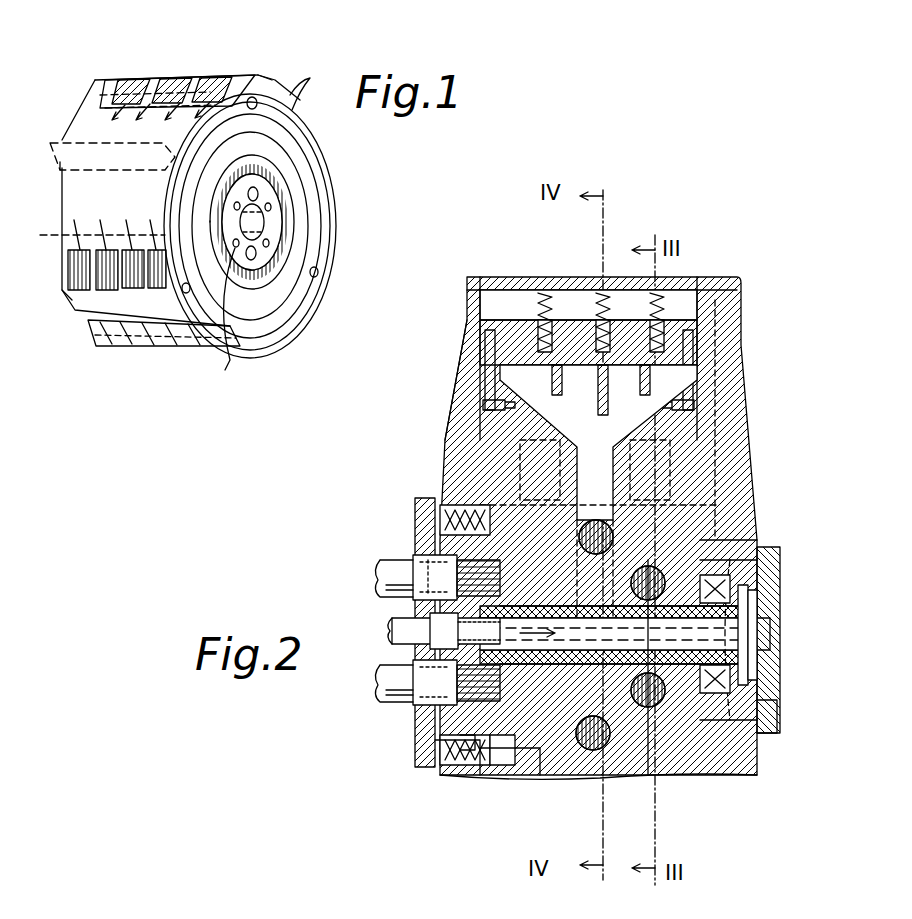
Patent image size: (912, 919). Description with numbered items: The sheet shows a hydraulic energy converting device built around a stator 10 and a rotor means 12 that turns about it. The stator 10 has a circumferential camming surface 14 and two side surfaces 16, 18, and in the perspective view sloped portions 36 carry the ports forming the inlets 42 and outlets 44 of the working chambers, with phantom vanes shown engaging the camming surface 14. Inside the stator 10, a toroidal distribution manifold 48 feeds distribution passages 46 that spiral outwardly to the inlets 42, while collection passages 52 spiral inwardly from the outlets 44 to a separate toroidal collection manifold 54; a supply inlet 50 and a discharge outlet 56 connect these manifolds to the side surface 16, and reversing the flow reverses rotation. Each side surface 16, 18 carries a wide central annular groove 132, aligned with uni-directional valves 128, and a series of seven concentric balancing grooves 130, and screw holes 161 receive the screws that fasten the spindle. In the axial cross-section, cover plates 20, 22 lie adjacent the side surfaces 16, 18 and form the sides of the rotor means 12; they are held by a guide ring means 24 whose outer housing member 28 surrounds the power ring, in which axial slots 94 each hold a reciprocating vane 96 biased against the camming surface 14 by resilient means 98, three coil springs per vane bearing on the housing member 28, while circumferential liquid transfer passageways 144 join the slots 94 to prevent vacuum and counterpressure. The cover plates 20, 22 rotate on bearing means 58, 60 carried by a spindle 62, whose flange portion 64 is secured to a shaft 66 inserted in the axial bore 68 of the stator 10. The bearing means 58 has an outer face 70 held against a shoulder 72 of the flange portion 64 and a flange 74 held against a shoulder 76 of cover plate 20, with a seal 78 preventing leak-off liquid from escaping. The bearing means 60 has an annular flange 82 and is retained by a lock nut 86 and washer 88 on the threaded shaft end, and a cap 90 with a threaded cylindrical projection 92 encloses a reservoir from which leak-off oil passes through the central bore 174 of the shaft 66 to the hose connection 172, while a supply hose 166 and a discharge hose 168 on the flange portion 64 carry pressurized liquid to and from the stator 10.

In FIG. 1, the stator 10 is at (271, 56).
In FIG. 2, the stator 10 is at (700, 775).
In FIG. 2, the rotor means 12 is at (752, 320).
In FIG. 1, the circumferential camming surface 14 is at (72, 196).
In FIG. 1, the side surface 16 is at (305, 217).
In FIG. 2, the side surface 16 is at (545, 505).
In FIG. 1, the side surface 18 is at (90, 118).
In FIG. 2, the side surface 18 is at (695, 500).
In FIG. 2, the cover plate 20 is at (462, 380).
In FIG. 2, the cover plate 22 is at (700, 430).
In FIG. 2, the guide ring means 24 is at (686, 265).
In FIG. 2, the housing member 28 is at (630, 280).
In FIG. 1, the sloped portions 36 is at (128, 90).
In FIG. 1, the inlets 42 is at (165, 100).
In FIG. 1, the outlets 44 is at (120, 282).
In FIG. 2, the distribution passages 46 is at (750, 448).
In FIG. 2, the distribution manifold 48 is at (648, 775).
In FIG. 1, the supply inlet 50 is at (255, 252).
In FIG. 2, the supply inlet 50 is at (580, 720).
In FIG. 2, the collection passages 52 is at (590, 470).
In FIG. 2, the collection manifold 54 is at (575, 540).
In FIG. 1, the discharge outlet 56 is at (256, 192).
In FIG. 2, the discharge outlet 56 is at (665, 580).
In FIG. 2, the bearing means 58 is at (465, 775).
In FIG. 2, the bearing means 60 is at (735, 588).
In FIG. 2, the spindle 62 is at (402, 728).
In FIG. 2, the flange portion 64 is at (440, 760).
In FIG. 2, the shaft 66 is at (525, 650).
In FIG. 1, the axial bore 68 is at (256, 225).
In FIG. 2, the outer face 70 is at (462, 765).
In FIG. 2, the shoulder 72 is at (412, 690).
In FIG. 2, the flange 74 is at (490, 760).
In FIG. 2, the shoulder 76 is at (540, 770).
In FIG. 2, the seal 78 is at (440, 522).
In FIG. 2, the annular flange 82 is at (720, 775).
In FIG. 2, the lock nut 86 is at (752, 602).
In FIG. 2, the washer 88 is at (760, 665).
In FIG. 2, the cap 90 is at (770, 634).
In FIG. 2, the cylindrical projection 92 is at (760, 552).
In FIG. 2, the slots 94 is at (520, 300).
In FIG. 2, the vane 96 is at (520, 330).
In FIG. 2, the resilient means 98 is at (605, 300).
In FIG. 1, the uni-directional valve 128 is at (252, 100).
In FIG. 1, the balancing grooves 130 is at (295, 118).
In FIG. 1, the annular groove 132 is at (270, 330).
In FIG. 2, the liquid transfer passageways 144 is at (585, 340).
In FIG. 1, the screw holes 161 is at (225, 370).
In FIG. 2, the pressurized liquid supply hose 166 is at (415, 700).
In FIG. 2, the discharge hose 168 is at (392, 575).
In FIG. 2, the hose connection 172 is at (400, 620).
In FIG. 2, the central bore 174 is at (720, 560).